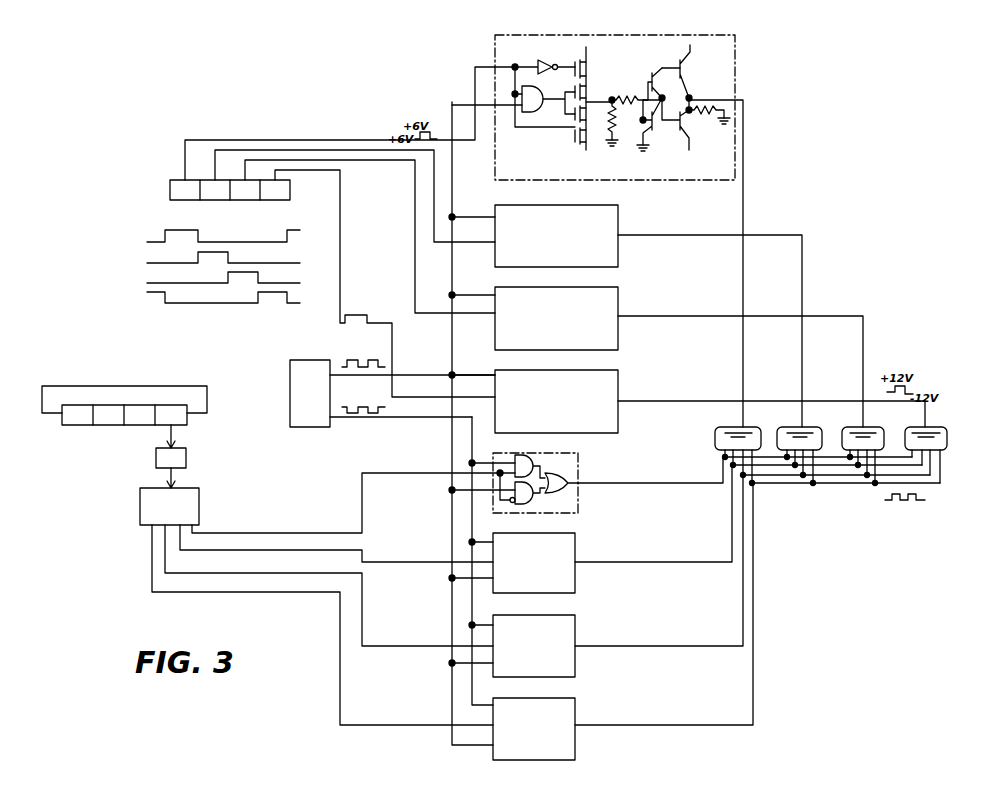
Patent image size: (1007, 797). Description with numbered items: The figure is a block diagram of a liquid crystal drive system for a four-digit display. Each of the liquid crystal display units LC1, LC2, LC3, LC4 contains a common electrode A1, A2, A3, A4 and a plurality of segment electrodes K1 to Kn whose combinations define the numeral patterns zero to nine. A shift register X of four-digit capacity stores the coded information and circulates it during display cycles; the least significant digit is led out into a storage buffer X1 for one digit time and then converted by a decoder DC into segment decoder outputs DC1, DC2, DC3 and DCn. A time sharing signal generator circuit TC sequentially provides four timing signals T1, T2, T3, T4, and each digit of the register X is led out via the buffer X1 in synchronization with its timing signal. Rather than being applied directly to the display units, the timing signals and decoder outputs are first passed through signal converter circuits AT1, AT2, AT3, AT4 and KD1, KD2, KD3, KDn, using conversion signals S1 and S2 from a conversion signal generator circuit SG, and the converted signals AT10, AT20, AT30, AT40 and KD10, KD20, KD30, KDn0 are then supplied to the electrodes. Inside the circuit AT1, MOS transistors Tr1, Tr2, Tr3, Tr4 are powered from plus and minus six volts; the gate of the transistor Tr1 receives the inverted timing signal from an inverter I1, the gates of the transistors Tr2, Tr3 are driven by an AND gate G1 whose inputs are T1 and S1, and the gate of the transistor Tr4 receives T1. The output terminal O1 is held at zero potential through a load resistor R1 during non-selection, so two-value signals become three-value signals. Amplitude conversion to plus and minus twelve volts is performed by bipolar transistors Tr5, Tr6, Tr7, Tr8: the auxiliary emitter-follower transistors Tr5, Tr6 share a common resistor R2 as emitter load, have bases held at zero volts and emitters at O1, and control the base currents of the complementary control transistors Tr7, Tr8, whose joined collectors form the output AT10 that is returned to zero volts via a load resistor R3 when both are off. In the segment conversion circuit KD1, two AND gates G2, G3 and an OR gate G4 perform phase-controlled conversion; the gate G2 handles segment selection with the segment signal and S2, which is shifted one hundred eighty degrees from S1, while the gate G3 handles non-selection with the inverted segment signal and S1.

The time sharing signal generator circuit TC is at (230, 202).
The timing signal T1 is at (318, 157).
The timing signal T2 is at (308, 209).
The timing signal T3 is at (308, 236).
The timing signal T4 is at (308, 283).
The conversion signal generator circuit SG is at (392, 263).
The conversion signal S1 is at (396, 242).
The conversion signal S2 is at (385, 415).
The shift register X is at (124, 405).
The storage buffer X1 is at (171, 446).
The decoder DC is at (169, 496).
The segment decoder output DC1 is at (353, 503).
The segment decoder output DC2 is at (336, 543).
The segment decoder output DC3 is at (329, 585).
The segment decoder output DCn is at (322, 625).
The signal converter circuit AT1 is at (593, 106).
The signal converter circuit AT2 is at (556, 236).
The signal converter circuit AT3 is at (556, 318).
The signal converter circuit AT4 is at (556, 401).
The converted signal AT10 is at (737, 263).
The converted signal AT20 is at (710, 322).
The converted signal AT30 is at (740, 363).
The converted signal AT40 is at (771, 405).
The inverter I1 is at (545, 61).
The AND gate G1 is at (548, 107).
The AND gate G2 is at (530, 466).
The AND gate G3 is at (527, 498).
The OR gate G4 is at (560, 493).
The MOS transistor Tr1 is at (592, 66).
The MOS transistor Tr2 is at (592, 90).
The MOS transistor Tr3 is at (592, 112).
The MOS transistor Tr4 is at (592, 135).
The auxiliary transistor Tr5 is at (665, 83).
The auxiliary transistor Tr6 is at (657, 124).
The control transistor Tr7 is at (696, 71).
The control transistor Tr8 is at (687, 124).
The output terminal O1 is at (609, 79).
The load resistor R1 is at (621, 123).
The common resistor R2 is at (632, 92).
The load resistor R3 is at (709, 117).
The conversion circuit KD1 is at (536, 476).
The conversion circuit KD2 is at (534, 563).
The conversion circuit KD3 is at (534, 646).
The conversion circuit KDn is at (534, 729).
The converted signal KD10 is at (650, 470).
The converted signal KD20 is at (653, 513).
The converted signal KD30 is at (659, 560).
The converted signal KDn0 is at (664, 604).
The liquid crystal display unit LC1 is at (733, 445).
The liquid crystal display unit LC2 is at (796, 445).
The liquid crystal display unit LC3 is at (858, 445).
The liquid crystal display unit LC4 is at (921, 445).
The common electrode A1 is at (752, 414).
The common electrode A2 is at (816, 414).
The common electrode A3 is at (878, 414).
The common electrode A4 is at (948, 425).
The segment electrode K1 is at (716, 440).
The segment electrode Kn is at (758, 440).